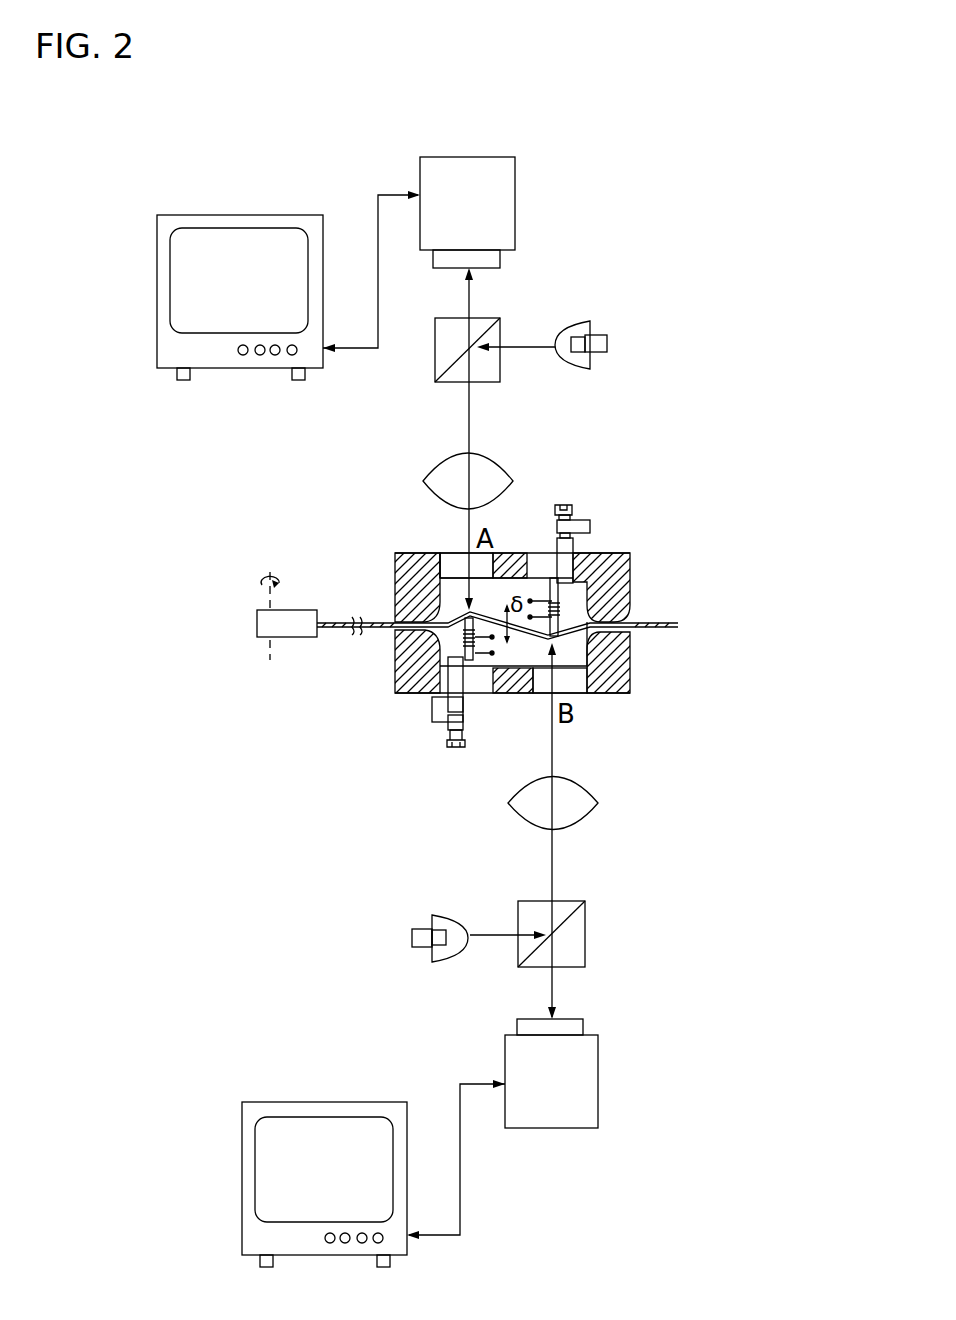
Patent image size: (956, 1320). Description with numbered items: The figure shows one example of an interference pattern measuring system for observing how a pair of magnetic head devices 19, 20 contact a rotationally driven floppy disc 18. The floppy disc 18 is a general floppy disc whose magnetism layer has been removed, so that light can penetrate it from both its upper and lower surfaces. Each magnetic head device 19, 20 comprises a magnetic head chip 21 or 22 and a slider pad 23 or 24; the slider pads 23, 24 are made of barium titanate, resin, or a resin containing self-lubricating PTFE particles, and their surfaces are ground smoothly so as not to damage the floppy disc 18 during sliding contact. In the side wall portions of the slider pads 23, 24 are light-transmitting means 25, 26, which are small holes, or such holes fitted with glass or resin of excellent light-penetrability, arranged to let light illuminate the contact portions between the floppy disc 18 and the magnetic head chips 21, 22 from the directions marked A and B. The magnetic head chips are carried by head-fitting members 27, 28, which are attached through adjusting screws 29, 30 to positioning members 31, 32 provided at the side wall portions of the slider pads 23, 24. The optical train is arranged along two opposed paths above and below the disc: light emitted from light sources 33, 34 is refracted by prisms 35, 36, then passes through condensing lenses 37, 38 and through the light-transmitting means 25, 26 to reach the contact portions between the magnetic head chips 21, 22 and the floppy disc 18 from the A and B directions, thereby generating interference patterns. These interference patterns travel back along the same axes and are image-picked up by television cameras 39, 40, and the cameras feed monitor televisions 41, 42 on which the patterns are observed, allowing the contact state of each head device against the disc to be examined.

The floppy disc 18 is at (673, 628).
The magnetic head device 19 is at (503, 552).
The magnetic head device 20 is at (515, 692).
The magnetic head chip 21 is at (560, 620).
The magnetic head chip 22 is at (466, 657).
The slider pad 23 is at (394, 587).
The slider pad 24 is at (403, 636).
The light-transmitting means 25 is at (457, 562).
The light-transmitting means 26 is at (568, 677).
The head-fitting member 27 is at (570, 563).
The head-fitting member 28 is at (457, 683).
The adjusting screw 29 is at (568, 507).
The adjusting screw 30 is at (453, 742).
The positioning member 31 is at (590, 523).
The positioning member 32 is at (436, 720).
The light source 33 is at (573, 320).
The light source 34 is at (442, 958).
The prism 35 is at (497, 330).
The prism 36 is at (587, 952).
The condensing lens 37 is at (498, 468).
The condensing lens 38 is at (590, 808).
The television camera 39 is at (513, 168).
The television camera 40 is at (598, 1097).
The monitor television 41 is at (158, 215).
The monitor television 42 is at (253, 1113).